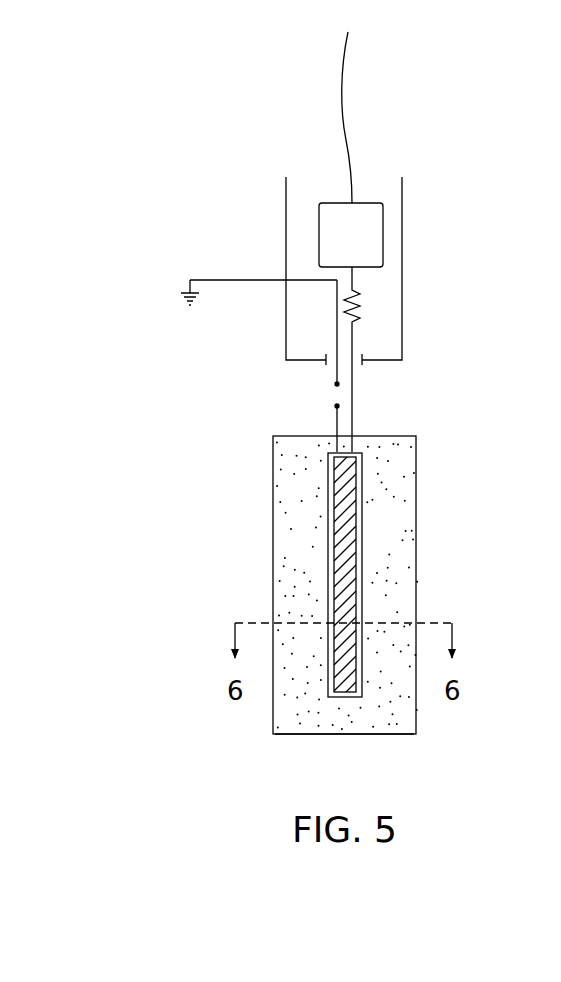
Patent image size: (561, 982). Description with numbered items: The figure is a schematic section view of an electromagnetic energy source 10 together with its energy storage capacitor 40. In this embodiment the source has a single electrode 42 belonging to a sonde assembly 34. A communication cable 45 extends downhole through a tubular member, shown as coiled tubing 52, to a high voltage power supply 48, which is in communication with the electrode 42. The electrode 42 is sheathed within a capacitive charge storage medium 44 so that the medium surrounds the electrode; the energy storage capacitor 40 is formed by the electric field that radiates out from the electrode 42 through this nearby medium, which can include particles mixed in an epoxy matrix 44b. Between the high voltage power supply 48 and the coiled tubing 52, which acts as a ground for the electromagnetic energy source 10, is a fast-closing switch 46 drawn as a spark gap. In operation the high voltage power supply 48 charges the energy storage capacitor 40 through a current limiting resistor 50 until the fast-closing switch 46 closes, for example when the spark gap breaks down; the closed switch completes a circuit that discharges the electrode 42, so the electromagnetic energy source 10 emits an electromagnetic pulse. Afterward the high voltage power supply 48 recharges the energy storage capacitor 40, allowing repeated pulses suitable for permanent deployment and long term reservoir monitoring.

The electromagnetic energy source 10 is at (196, 181).
The communication cable 45 is at (342, 82).
The high voltage power supply 48 is at (368, 203).
The coiled tubing 52 is at (403, 235).
The current limiting resistor 50 is at (362, 297).
The fast-closing switch 46 is at (332, 401).
The capacitive charge storage medium 44 is at (280, 475).
The electrode 42 is at (352, 589).
The epoxy matrix 44b is at (331, 727).
The sonde assembly 34 is at (222, 523).
The energy storage capacitor 40 is at (206, 617).